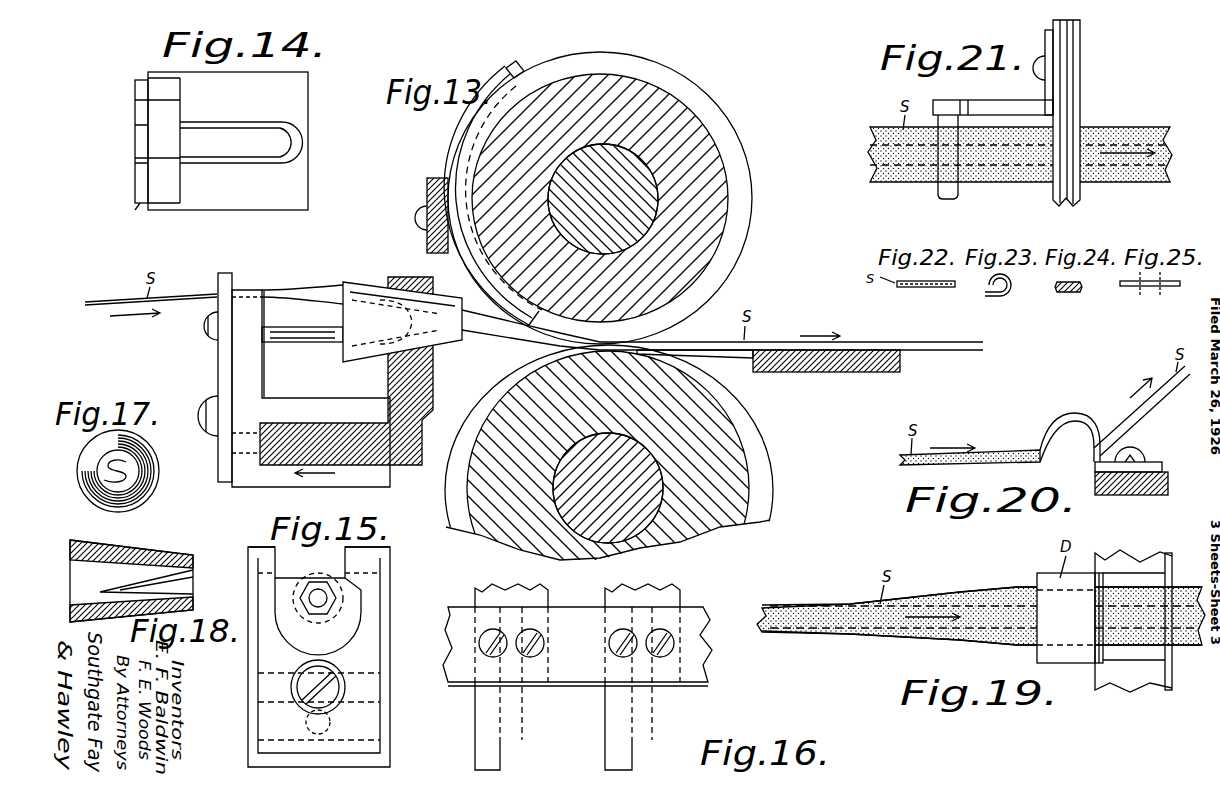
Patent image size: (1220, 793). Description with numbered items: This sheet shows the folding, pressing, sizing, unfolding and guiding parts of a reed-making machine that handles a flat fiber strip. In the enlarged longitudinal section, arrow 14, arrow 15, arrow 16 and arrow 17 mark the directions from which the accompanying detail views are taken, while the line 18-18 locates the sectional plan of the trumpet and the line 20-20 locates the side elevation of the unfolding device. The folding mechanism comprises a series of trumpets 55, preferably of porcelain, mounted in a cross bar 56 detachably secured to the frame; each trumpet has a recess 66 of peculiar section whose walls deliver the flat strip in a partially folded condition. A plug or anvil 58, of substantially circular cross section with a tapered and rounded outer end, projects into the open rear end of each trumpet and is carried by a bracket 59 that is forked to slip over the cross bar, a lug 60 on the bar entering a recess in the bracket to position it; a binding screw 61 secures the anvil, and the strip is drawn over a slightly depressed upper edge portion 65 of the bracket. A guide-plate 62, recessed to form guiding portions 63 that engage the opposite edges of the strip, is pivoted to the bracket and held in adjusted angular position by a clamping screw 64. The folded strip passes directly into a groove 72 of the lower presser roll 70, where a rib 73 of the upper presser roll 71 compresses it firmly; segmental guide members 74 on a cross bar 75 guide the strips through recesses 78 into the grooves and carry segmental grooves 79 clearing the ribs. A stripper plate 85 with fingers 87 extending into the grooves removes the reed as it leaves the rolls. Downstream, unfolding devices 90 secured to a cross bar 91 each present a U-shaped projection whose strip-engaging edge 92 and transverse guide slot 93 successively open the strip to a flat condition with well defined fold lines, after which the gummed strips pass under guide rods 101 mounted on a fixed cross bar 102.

In FIG. 13, the arrow 14 is at (292, 274).
In FIG. 13, the arrow 15 is at (204, 370).
In FIG. 13, the arrow 16 is at (412, 196).
In FIG. 13, the arrow 17 is at (500, 344).
In FIG. 17, the section line 18 is at (184, 477).
In FIG. 19, the section line 20 is at (1024, 658).
In FIG. 13, the trumpet 55 is at (360, 290).
In FIG. 17, the trumpet 55 is at (136, 504).
In FIG. 18, the trumpet 55 is at (122, 545).
In FIG. 13, the cross bar 56 is at (433, 378).
In FIG. 13, the plug or anvil 58 is at (288, 342).
In FIG. 14, the plug or anvil 58 is at (228, 128).
In FIG. 13, the bracket 59 is at (255, 378).
In FIG. 14, the bracket 59 is at (170, 185).
In FIG. 15, the bracket 59 is at (382, 616).
In FIG. 13, the lug 60 is at (248, 433).
In FIG. 15, the lug 60 is at (331, 720).
In FIG. 13, the binding screw 61 is at (212, 331).
In FIG. 14, the binding screw 61 is at (138, 133).
In FIG. 15, the binding screw 61 is at (330, 610).
In FIG. 13, the guide-plate 62 is at (226, 273).
In FIG. 14, the guide-plate 62 is at (140, 200).
In FIG. 15, the guide-plate 62 is at (268, 655).
In FIG. 15, the guiding portions 63 is at (258, 553).
In FIG. 13, the clamping screw 64 is at (210, 404).
In FIG. 15, the clamping screw 64 is at (326, 690).
In FIG. 14, the depressed upper edge portion 65 is at (164, 118).
In FIG. 15, the depressed upper edge portion 65 is at (298, 578).
In FIG. 17, the recess 66 is at (126, 460).
In FIG. 18, the recess 66 is at (160, 578).
In FIG. 13, the lower presser roll 70 is at (760, 483).
In FIG. 13, the upper presser roll 71 is at (676, 118).
In FIG. 13, the groove 72 is at (752, 447).
In FIG. 13, the rib 73 is at (740, 140).
In FIG. 16, the guide members 74 is at (476, 710).
In FIG. 13, the cross bar 75 is at (485, 193).
In FIG. 16, the cross bar 75 is at (690, 612).
In FIG. 16, the recesses 78 is at (640, 752).
In FIG. 16, the segmental grooves 79 is at (528, 600).
In FIG. 13, the stripper plate 85 is at (840, 374).
In FIG. 13, the fingers 87 is at (757, 360).
In FIG. 20, the unfolding device 90 is at (1120, 460).
In FIG. 19, the unfolding device 90 is at (1100, 580).
In FIG. 20, the cross bar 91 is at (1168, 480).
In FIG. 19, the cross bar 91 is at (1170, 560).
In FIG. 20, the strip-engaging edge 92 is at (1042, 450).
In FIG. 20, the transverse guide slot 93 is at (1108, 446).
In FIG. 19, the transverse guide slot 93 is at (1092, 656).
In FIG. 21, the guide rods 101 is at (938, 190).
In FIG. 21, the fixed cross bar 102 is at (1080, 58).